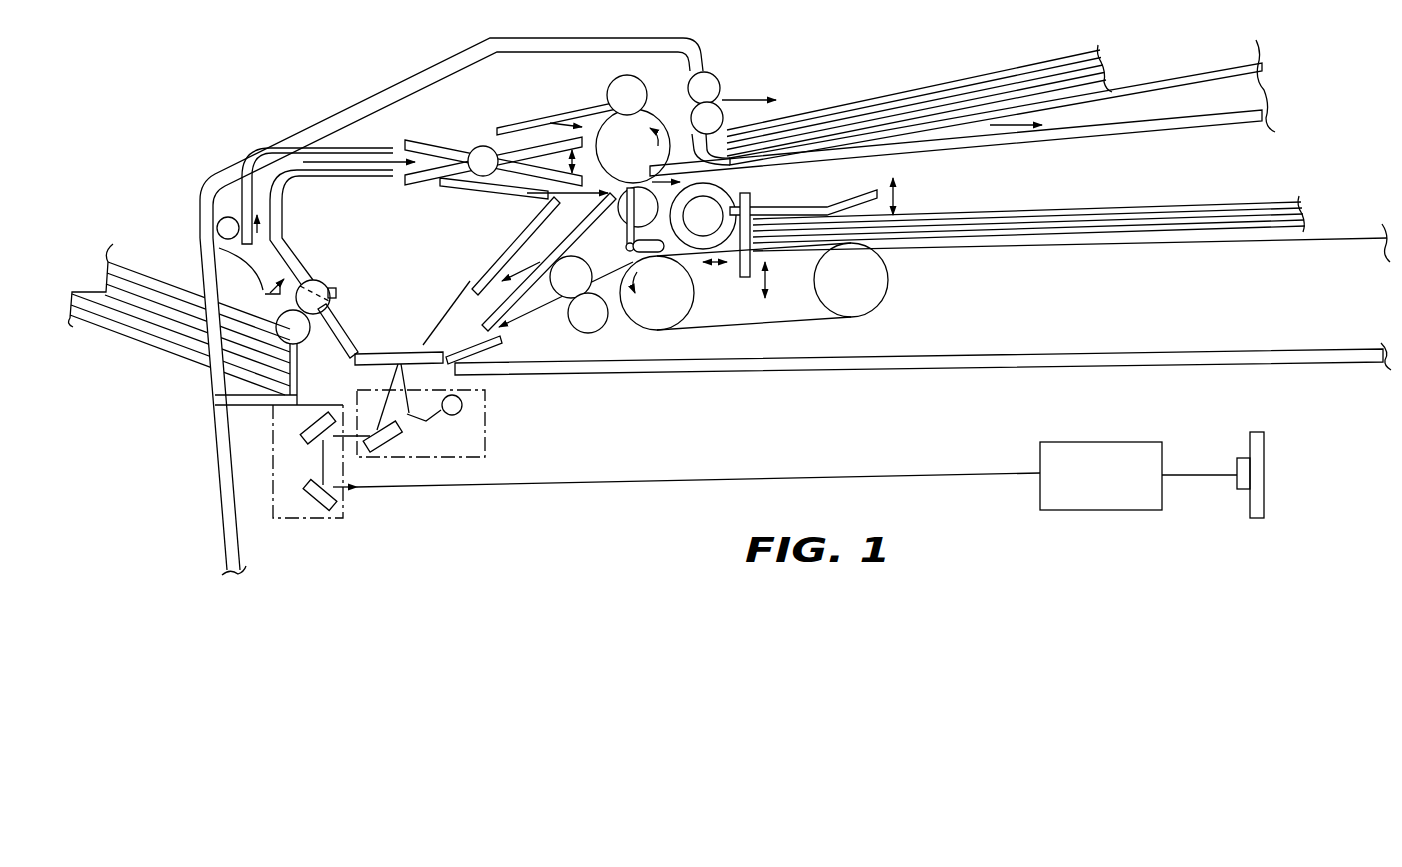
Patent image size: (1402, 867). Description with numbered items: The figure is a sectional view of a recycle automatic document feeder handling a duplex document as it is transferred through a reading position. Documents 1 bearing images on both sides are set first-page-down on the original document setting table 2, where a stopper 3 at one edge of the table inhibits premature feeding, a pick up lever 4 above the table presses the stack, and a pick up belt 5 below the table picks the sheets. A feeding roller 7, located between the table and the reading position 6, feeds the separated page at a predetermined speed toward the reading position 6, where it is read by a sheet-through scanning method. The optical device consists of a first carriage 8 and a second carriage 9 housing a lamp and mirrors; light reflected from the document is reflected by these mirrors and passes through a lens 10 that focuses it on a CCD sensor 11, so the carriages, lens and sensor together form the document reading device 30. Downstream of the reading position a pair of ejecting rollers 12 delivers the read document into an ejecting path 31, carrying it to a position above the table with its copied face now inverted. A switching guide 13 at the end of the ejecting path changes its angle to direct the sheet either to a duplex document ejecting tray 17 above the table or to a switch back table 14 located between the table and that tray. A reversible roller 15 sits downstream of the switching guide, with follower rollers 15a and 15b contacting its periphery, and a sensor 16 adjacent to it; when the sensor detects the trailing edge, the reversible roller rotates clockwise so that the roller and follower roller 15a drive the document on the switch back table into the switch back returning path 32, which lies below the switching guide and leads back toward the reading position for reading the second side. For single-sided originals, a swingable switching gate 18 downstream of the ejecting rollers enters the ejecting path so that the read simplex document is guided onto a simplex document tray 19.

The document 1 is at (542, 205).
The original document setting table 2 is at (482, 276).
The stopper 3 is at (548, 126).
The pick up lever 4 is at (775, 210).
The pick up belt 5 is at (758, 322).
The reading position 6 is at (411, 352).
The feeding roller 7 is at (562, 296).
The first carriage 8 is at (487, 417).
The second carriage 9 is at (287, 520).
The lens 10 is at (1088, 442).
The CCD sensor 11 is at (1258, 433).
The ejecting rollers 12 is at (331, 300).
The switching guide 13 is at (432, 142).
The switch back table 14 is at (1018, 140).
The reversible roller 15 is at (671, 138).
The follower roller 15a is at (625, 228).
The follower roller 15b is at (611, 79).
The sensor 16 is at (690, 256).
The duplex document ejecting tray 17 is at (1170, 75).
The switching gate 18 is at (256, 263).
The simplex document tray 19 is at (162, 358).
The document reading device 30 is at (617, 509).
The ejecting path 31 is at (281, 240).
The switch back returning path 32 is at (510, 246).